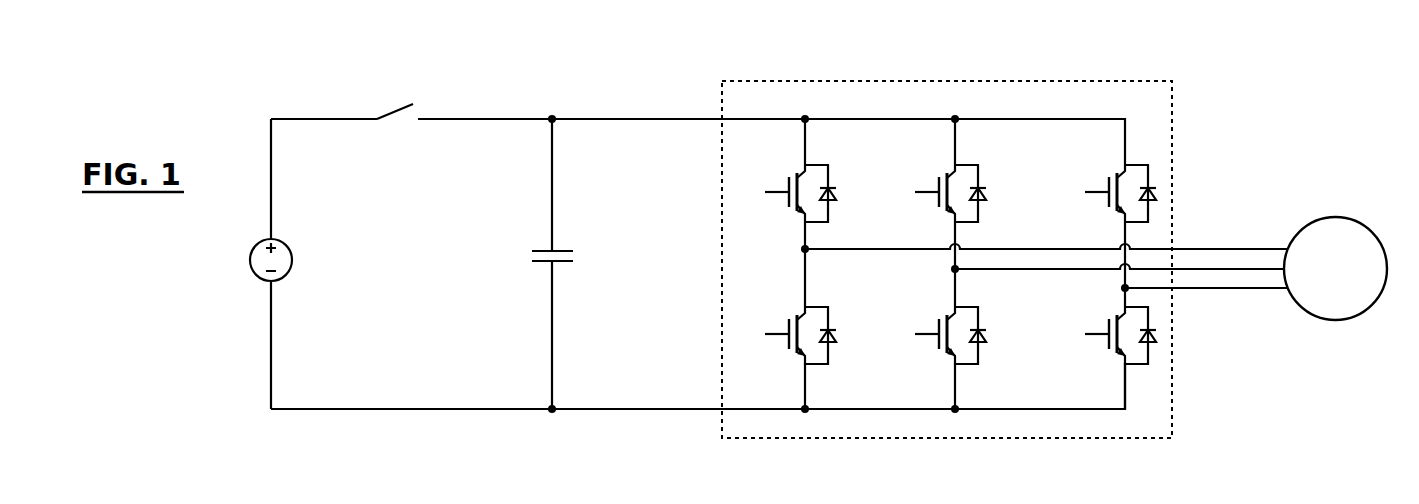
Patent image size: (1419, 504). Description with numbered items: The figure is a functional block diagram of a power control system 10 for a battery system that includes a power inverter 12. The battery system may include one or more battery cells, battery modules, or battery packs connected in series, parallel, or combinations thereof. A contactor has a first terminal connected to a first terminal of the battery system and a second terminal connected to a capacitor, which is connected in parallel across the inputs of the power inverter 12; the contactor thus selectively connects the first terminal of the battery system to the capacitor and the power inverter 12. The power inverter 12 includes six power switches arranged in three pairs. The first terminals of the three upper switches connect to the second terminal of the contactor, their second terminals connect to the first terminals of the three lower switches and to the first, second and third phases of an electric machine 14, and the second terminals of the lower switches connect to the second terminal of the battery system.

The power control system 10 is at (1266, 92).
The power inverter 12 is at (905, 81).
The electric machine 14 is at (1338, 218).